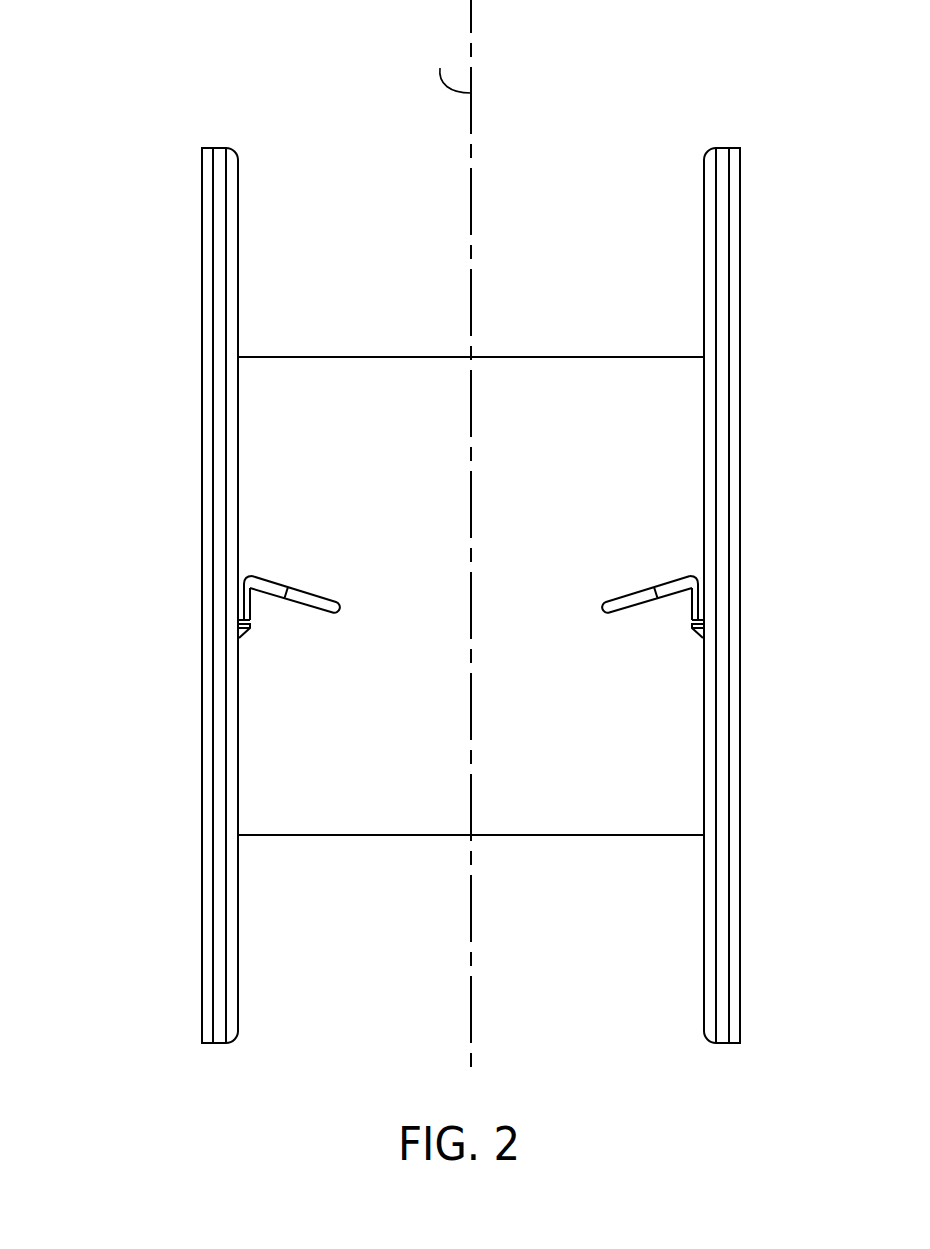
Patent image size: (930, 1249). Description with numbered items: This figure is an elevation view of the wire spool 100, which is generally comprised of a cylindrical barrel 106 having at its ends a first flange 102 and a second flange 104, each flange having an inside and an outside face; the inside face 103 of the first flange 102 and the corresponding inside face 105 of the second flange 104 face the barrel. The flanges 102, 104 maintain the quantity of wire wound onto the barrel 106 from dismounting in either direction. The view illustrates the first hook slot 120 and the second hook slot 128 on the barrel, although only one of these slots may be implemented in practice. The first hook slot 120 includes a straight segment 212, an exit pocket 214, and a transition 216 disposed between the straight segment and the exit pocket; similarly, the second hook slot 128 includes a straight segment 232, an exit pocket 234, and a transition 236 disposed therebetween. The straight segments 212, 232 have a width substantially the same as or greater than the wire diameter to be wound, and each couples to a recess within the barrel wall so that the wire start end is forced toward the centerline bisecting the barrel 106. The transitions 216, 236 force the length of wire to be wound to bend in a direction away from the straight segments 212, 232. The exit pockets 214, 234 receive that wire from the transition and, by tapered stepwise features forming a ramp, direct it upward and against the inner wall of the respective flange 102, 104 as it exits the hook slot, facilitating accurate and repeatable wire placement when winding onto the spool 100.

The spool 100 is at (122, 112).
The first flange 102 is at (213, 163).
The inside face 103 is at (241, 173).
The second flange 104 is at (729, 158).
The second rail lip 105 is at (708, 178).
The cylindrical barrel 106 is at (560, 376).
The first hook slot 120 is at (274, 548).
The straight segment 212 is at (289, 588).
The exit pocket 214 is at (245, 630).
The transition 216 is at (257, 584).
The second hook slot 128 is at (665, 548).
The straight segment 232 is at (653, 588).
The exit pocket 234 is at (700, 628).
The transition 236 is at (690, 580).